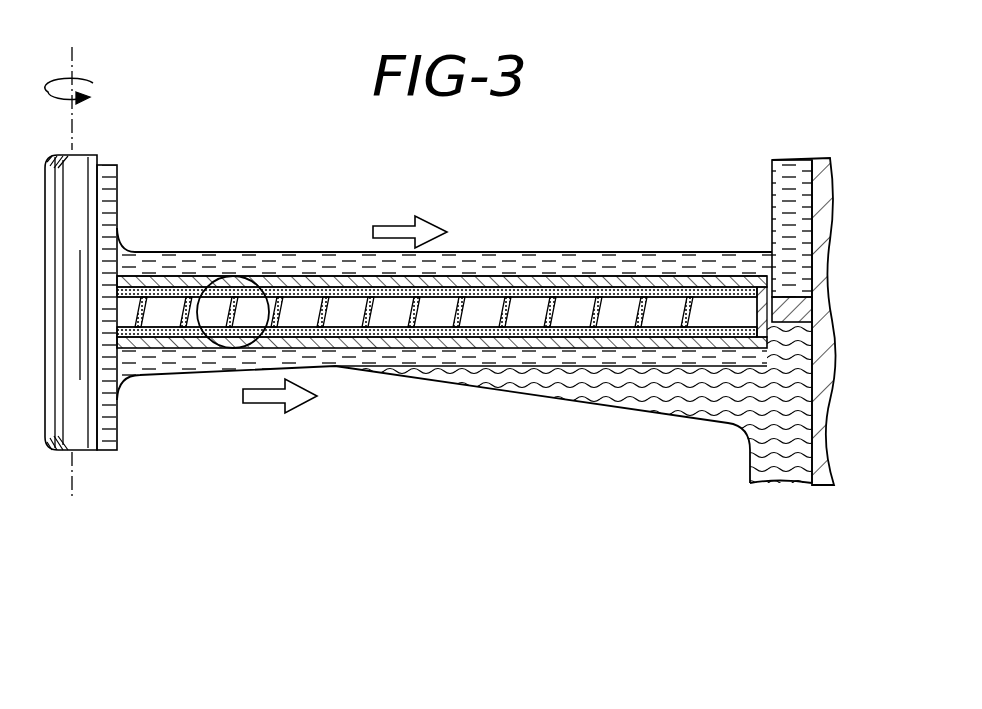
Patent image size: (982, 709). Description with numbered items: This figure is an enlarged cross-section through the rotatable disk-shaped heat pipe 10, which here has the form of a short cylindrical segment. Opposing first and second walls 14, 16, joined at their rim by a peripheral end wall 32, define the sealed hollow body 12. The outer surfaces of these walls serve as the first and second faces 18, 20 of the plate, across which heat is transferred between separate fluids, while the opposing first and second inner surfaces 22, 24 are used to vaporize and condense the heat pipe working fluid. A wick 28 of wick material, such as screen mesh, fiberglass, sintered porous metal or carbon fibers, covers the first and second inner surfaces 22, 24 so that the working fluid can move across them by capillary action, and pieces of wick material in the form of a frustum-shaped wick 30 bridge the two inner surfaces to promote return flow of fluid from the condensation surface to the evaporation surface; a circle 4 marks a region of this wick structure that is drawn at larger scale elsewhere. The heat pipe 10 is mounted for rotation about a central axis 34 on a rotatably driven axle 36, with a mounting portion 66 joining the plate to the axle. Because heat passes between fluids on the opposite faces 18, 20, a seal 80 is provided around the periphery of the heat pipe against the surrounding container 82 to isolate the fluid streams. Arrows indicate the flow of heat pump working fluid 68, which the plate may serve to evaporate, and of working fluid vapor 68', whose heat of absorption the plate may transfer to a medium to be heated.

The heat pipe 10 is at (528, 208).
The hollow body 12 is at (723, 312).
The first wall 14 is at (666, 268).
The second wall 16 is at (557, 364).
The first face 18 is at (465, 277).
The second face 20 is at (472, 352).
The first inner surface 22 is at (531, 300).
The second inner surface 24 is at (560, 364).
The wick 28 is at (330, 327).
The frustum-shaped wick 30 is at (182, 327).
The peripheral end wall 32 is at (772, 256).
The central axis 34 is at (73, 468).
The rotatably driven axle 36 is at (45, 440).
The detail region of FIG. 4 is at (240, 277).
The left flange 66 is at (117, 247).
The heat pump working fluid 68 is at (433, 424).
The working fluid vapor 68' is at (573, 419).
The seal 80 is at (783, 345).
The container 82 is at (820, 486).